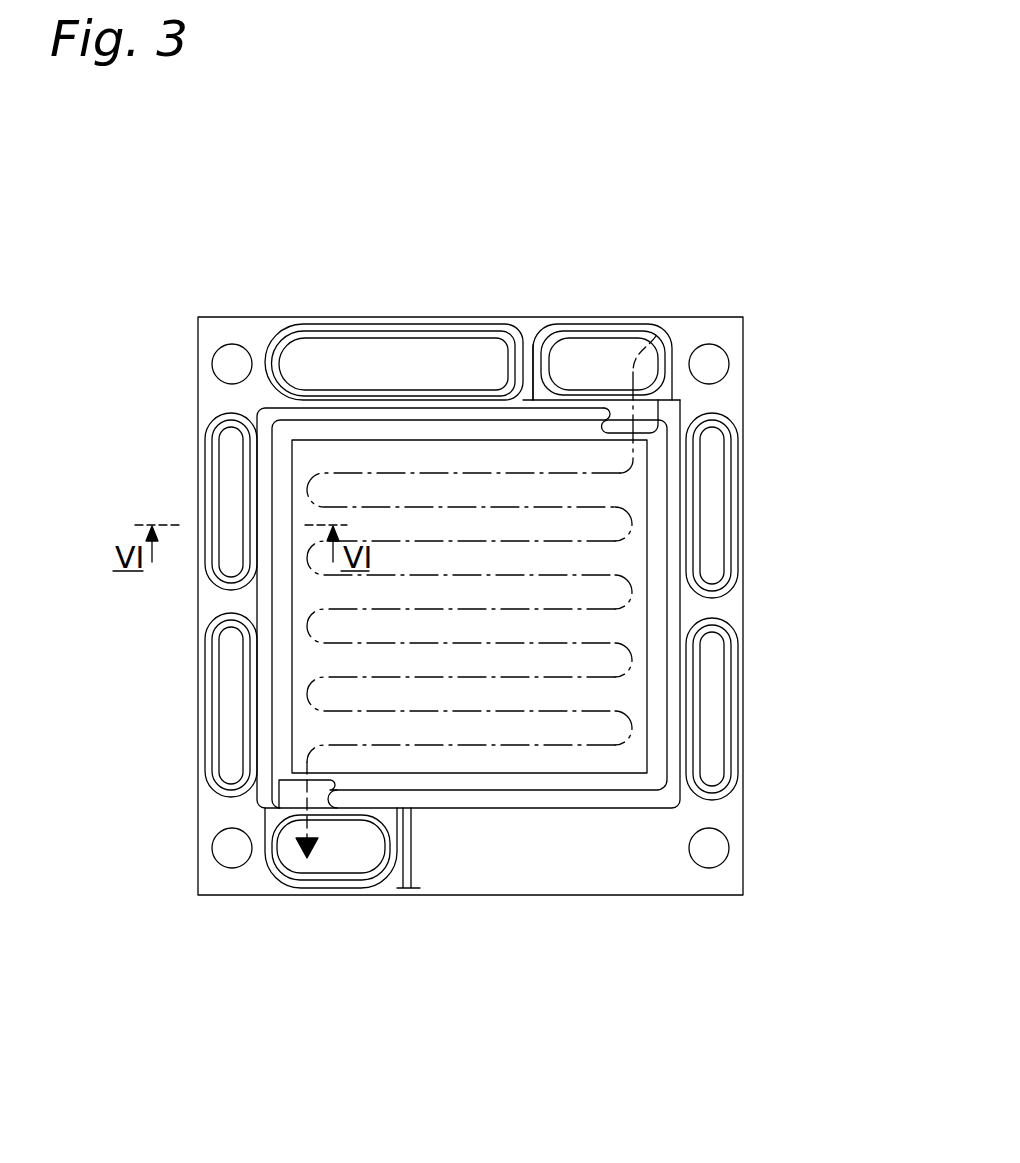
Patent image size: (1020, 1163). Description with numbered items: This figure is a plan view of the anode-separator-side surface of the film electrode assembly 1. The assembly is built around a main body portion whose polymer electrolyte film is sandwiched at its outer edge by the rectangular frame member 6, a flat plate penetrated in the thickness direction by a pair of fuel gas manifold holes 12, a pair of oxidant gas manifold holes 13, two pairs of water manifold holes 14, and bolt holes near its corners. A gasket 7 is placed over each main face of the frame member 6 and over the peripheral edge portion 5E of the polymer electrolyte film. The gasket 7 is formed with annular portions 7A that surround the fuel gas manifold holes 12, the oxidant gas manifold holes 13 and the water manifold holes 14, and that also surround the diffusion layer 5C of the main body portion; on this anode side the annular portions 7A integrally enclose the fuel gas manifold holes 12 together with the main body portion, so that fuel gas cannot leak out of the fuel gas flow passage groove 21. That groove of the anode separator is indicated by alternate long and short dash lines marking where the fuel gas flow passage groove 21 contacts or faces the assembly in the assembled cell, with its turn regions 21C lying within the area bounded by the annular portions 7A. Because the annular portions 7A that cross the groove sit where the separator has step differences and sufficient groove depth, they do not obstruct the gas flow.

The film electrode assembly 1 is at (812, 320).
The diffusion layer 5C is at (630, 612).
The peripheral edge portion 5E is at (333, 437).
The frame member 6 is at (728, 330).
The gasket 7 is at (360, 793).
The annular portions 7A is at (280, 500).
The fuel gas manifold holes 12 is at (618, 340).
The oxidant gas manifold holes 13 is at (441, 342).
The water manifold holes 14 is at (220, 543).
The fuel gas flow passage groove 21 is at (656, 336).
The turn portion of gas flow channel 21C is at (633, 512).